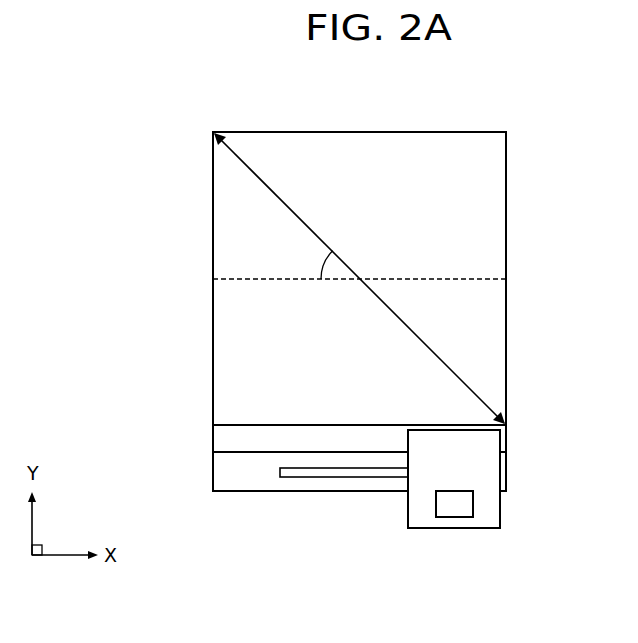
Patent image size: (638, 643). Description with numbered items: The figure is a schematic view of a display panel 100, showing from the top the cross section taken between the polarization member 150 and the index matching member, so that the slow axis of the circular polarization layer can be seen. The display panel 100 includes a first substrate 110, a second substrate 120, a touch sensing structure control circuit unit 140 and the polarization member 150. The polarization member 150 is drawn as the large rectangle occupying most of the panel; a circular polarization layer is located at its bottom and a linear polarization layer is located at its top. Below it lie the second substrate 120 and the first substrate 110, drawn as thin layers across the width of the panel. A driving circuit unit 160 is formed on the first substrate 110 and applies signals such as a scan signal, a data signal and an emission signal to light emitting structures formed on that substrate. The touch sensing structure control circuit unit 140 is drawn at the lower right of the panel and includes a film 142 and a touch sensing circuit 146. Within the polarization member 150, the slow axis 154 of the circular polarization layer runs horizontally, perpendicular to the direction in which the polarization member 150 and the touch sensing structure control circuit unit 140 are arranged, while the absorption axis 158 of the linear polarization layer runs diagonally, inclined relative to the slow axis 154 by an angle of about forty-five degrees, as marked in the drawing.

The display panel 100 is at (234, 108).
The first substrate 110 is at (218, 472).
The second substrate 120 is at (218, 440).
The touch sensing structure control circuit unit 140 is at (441, 532).
The film 142 is at (418, 517).
The touch sensing circuit 146 is at (458, 517).
The polarization member 150 is at (497, 182).
The slow axis 154 is at (236, 279).
The absorption axis 158 is at (260, 180).
The driving circuit unit 160 is at (305, 477).